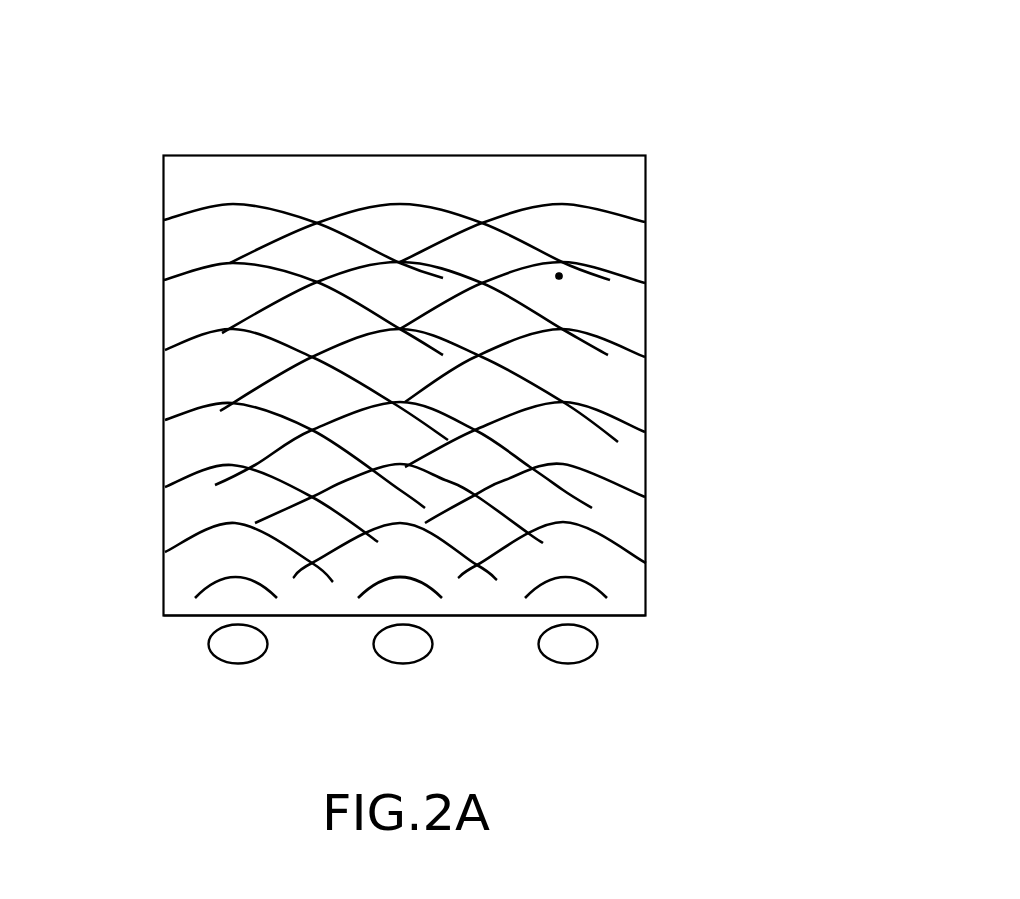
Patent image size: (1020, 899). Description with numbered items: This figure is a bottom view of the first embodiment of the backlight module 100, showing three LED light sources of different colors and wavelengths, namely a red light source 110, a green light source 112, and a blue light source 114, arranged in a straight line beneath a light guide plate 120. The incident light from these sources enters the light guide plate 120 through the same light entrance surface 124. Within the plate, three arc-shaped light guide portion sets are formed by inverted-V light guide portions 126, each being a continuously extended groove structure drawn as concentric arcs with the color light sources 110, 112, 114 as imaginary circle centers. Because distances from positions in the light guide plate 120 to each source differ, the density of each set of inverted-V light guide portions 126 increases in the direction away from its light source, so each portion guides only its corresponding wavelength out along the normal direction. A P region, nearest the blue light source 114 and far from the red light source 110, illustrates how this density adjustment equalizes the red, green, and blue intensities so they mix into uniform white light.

The backlight module 100 is at (558, 103).
The light guide plate 120 is at (640, 208).
The inverted-V light guide portion 126 is at (197, 404).
The P region P is at (570, 287).
The light entrance surface 124 is at (315, 616).
The red light source 110 is at (220, 640).
The green light source 112 is at (418, 650).
The blue light source 114 is at (587, 641).